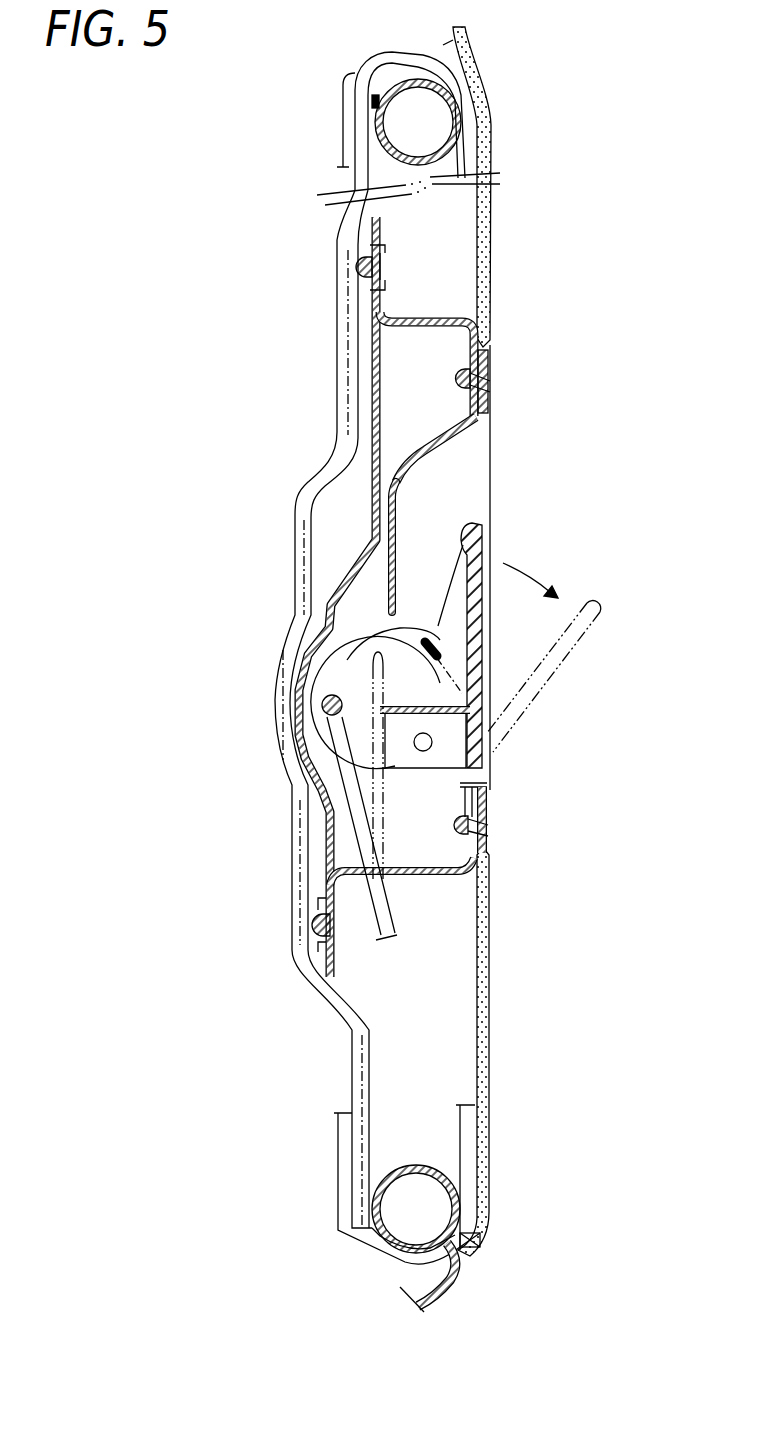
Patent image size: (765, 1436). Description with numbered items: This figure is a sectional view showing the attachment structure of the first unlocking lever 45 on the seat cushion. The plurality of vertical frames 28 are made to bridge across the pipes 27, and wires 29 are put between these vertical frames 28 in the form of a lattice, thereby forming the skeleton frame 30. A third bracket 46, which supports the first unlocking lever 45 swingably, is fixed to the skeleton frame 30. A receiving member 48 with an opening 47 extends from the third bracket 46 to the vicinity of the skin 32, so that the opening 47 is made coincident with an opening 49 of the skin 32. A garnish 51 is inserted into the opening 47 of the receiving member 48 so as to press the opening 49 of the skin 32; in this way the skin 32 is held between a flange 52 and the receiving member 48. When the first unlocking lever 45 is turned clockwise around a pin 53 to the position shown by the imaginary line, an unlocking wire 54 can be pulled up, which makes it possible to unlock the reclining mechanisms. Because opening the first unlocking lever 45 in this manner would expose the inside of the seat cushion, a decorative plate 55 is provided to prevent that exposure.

The pipe 27 is at (378, 99).
The vertical frame 28 is at (295, 548).
The wire 29 is at (360, 266).
The skeleton frame 30 is at (332, 334).
The skin 32 is at (492, 120).
The first unlocking lever 45 is at (482, 527).
The third bracket 46 is at (385, 417).
The opening 47 is at (490, 428).
The receiving member 48 is at (437, 318).
The opening 49 is at (492, 398).
The garnish 51 is at (428, 455).
The flange 52 is at (490, 367).
The pin 53 is at (432, 742).
The unlocking wire 54 is at (354, 840).
The decorative plate 55 is at (365, 645).